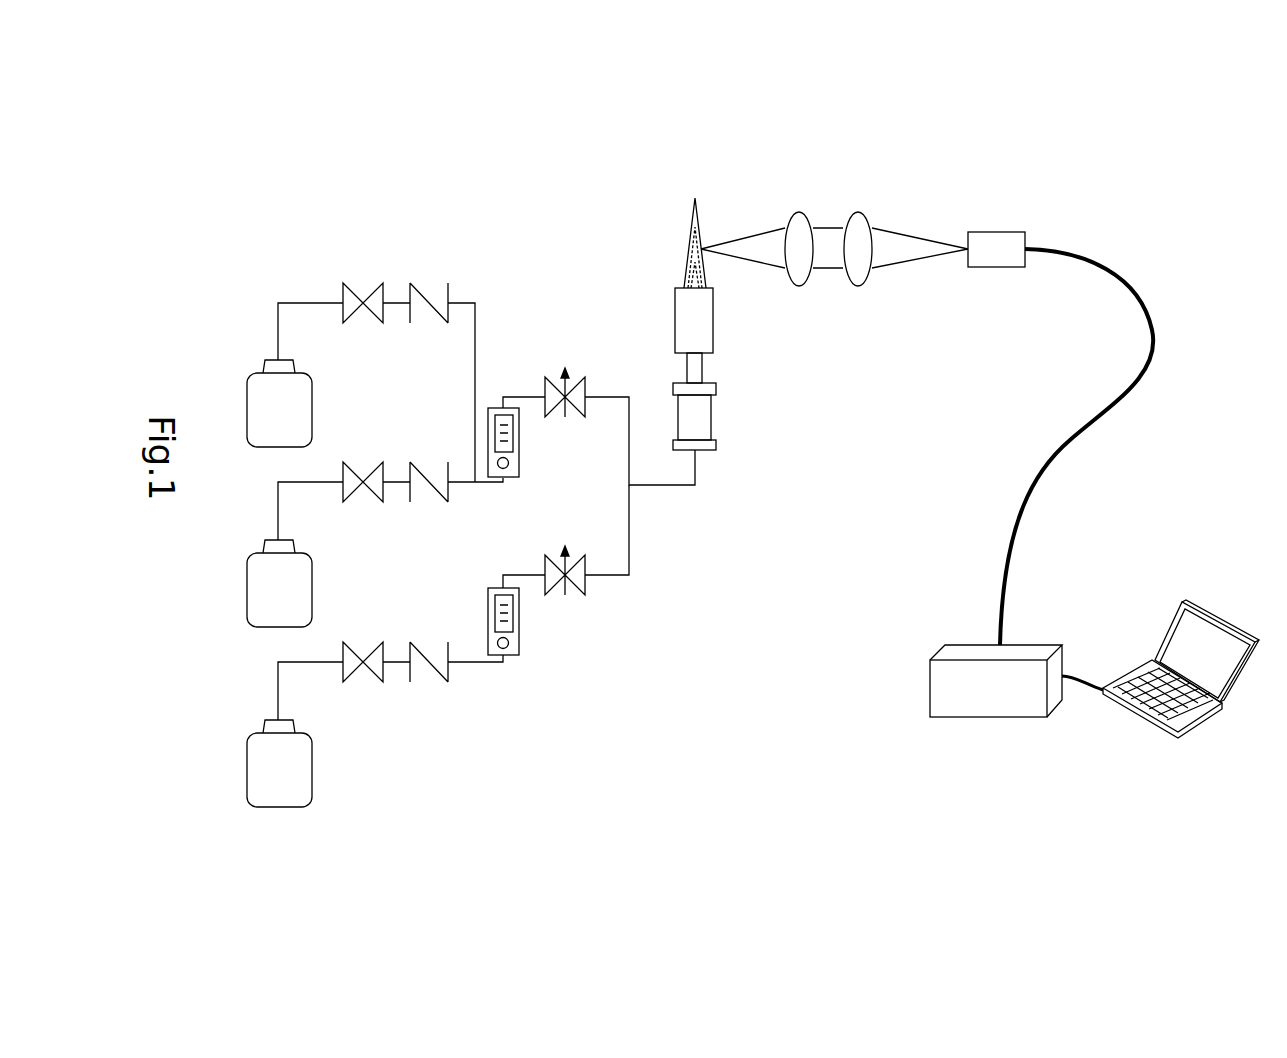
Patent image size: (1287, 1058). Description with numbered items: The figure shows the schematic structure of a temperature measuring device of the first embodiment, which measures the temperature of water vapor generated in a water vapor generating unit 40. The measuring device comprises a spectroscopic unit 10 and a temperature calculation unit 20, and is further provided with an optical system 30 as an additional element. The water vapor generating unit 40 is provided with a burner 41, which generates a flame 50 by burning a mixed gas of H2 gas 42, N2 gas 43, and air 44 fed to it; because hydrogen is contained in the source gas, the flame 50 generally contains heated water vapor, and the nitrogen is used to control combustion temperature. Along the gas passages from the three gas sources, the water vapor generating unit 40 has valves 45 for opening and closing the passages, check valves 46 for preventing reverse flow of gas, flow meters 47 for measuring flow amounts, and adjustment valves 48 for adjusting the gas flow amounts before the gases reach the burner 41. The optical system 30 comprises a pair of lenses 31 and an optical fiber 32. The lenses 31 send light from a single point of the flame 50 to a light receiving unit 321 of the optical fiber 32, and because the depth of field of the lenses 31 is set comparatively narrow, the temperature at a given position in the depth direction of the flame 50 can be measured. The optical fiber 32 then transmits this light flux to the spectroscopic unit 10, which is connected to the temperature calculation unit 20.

The spectroscopic unit 10 is at (985, 718).
The temperature calculation unit 20 is at (1218, 617).
The optical system 30 is at (1163, 254).
The lenses 31 is at (828, 290).
The optical fiber 32 is at (1158, 336).
The light receiving unit 321 is at (993, 268).
The water vapor generating unit 40 is at (533, 318).
The burner 41 is at (716, 321).
The H2 gas 42 is at (313, 592).
The N2 gas 43 is at (313, 411).
The air 44 is at (313, 771).
The valves 45 is at (351, 283).
The check valves 46 is at (418, 283).
The flow meters 47 is at (519, 440).
The adjustment valves 48 is at (586, 383).
The flame 50 is at (701, 218).